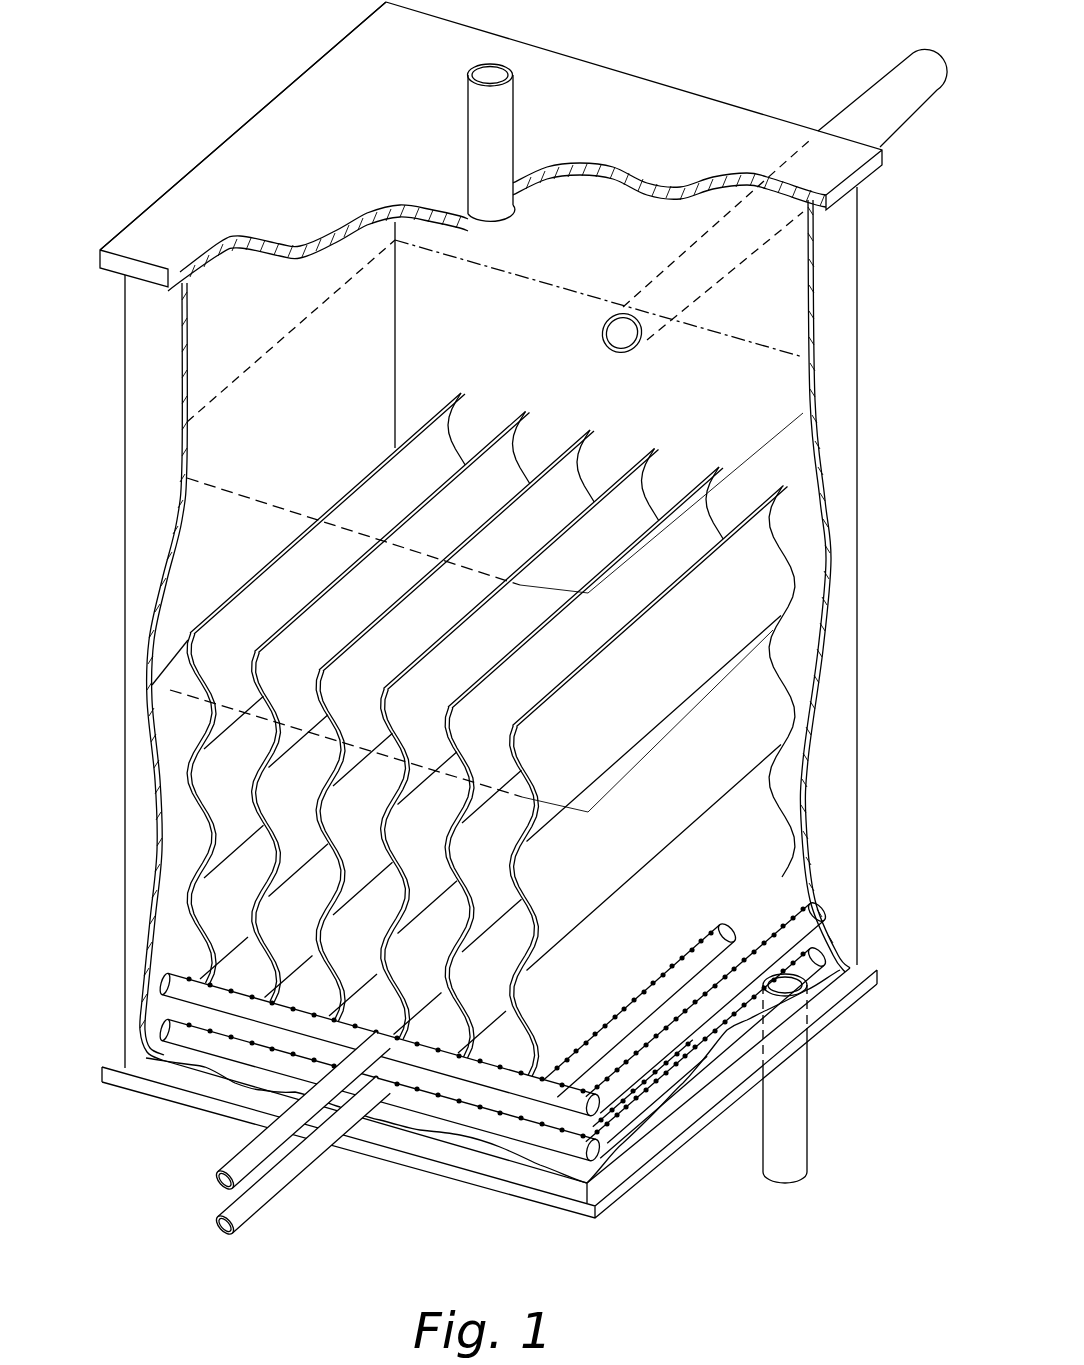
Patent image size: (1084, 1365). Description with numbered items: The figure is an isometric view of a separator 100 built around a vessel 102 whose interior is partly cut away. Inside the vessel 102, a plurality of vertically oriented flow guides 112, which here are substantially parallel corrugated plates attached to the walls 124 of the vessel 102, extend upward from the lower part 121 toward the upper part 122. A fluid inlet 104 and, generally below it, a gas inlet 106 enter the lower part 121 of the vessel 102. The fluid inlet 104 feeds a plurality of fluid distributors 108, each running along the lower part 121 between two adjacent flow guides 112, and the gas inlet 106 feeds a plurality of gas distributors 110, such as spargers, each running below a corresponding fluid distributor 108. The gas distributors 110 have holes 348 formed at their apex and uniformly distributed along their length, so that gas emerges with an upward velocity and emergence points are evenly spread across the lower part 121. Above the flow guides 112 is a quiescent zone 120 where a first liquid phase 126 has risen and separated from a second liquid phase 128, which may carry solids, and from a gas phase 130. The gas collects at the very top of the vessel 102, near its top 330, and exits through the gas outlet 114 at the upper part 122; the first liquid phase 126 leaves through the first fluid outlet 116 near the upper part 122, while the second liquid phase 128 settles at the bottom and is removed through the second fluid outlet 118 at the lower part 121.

The separator 100 is at (176, 36).
The vessel 102 is at (858, 270).
The fluid inlet 104 is at (226, 1160).
The gas inlet 106 is at (255, 1220).
The fluid distributors 108 is at (818, 903).
The gas distributors 110 is at (823, 950).
The flow guides 112 is at (462, 392).
The gas outlet 114 is at (466, 123).
The first fluid outlet 116 is at (880, 80).
The second fluid outlet 118 is at (805, 1105).
The quiescent zone 120 is at (796, 548).
The lower part 121 is at (852, 1031).
The upper part 122 is at (243, 120).
The walls 124 is at (840, 432).
The first liquid phase 126 is at (328, 389).
The second liquid phase 128 is at (172, 766).
The gas phase 130 is at (270, 290).
The top 330 is at (178, 194).
The holes 348 is at (625, 1095).